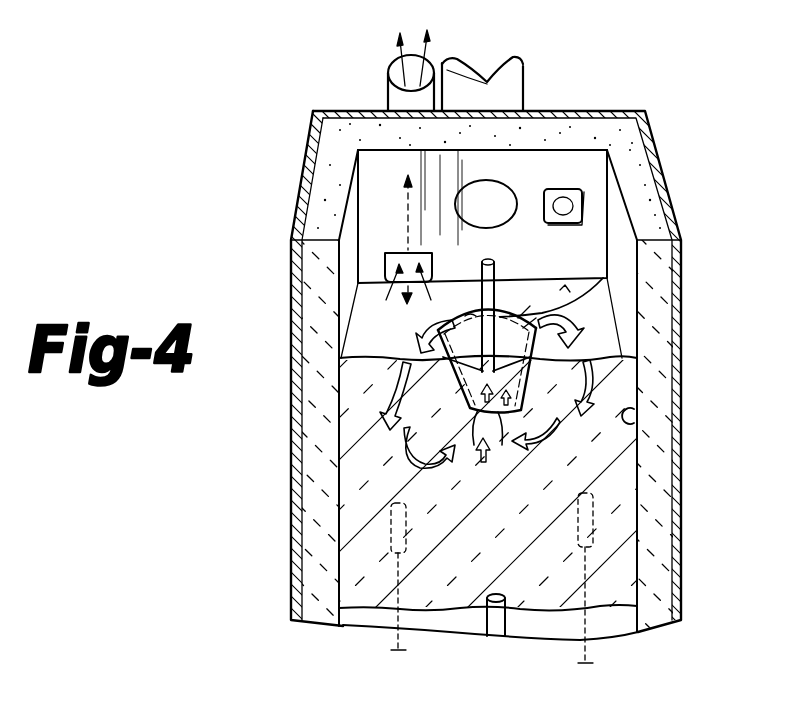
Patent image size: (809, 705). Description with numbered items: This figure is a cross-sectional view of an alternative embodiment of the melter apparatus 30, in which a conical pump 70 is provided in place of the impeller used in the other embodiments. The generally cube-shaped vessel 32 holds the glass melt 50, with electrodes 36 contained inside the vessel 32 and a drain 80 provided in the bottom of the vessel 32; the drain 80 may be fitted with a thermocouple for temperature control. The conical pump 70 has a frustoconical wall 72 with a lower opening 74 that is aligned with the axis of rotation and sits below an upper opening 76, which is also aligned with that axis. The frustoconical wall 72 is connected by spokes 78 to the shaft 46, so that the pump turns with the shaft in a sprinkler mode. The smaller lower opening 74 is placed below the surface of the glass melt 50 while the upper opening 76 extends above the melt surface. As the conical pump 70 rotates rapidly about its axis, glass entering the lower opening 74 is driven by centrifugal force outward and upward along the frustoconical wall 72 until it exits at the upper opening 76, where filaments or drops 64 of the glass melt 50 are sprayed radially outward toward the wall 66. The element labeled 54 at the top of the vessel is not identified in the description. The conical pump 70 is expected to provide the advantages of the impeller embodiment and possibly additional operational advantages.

The melter apparatus 30 is at (662, 30).
The vessel 32 is at (291, 262).
The electrodes 36 is at (592, 521).
The shaft 46 is at (481, 275).
The glass melt 50 is at (600, 305).
The exhaust pipe 54 is at (431, 60).
The filaments or drops 64 is at (600, 276).
The wall 66 is at (634, 421).
The conical pump 70 is at (598, 358).
The frustoconical wall 72 is at (440, 364).
The lower opening 74 is at (482, 455).
The upper opening 76 is at (513, 312).
The spokes 78 is at (408, 428).
The drain 80 is at (492, 612).